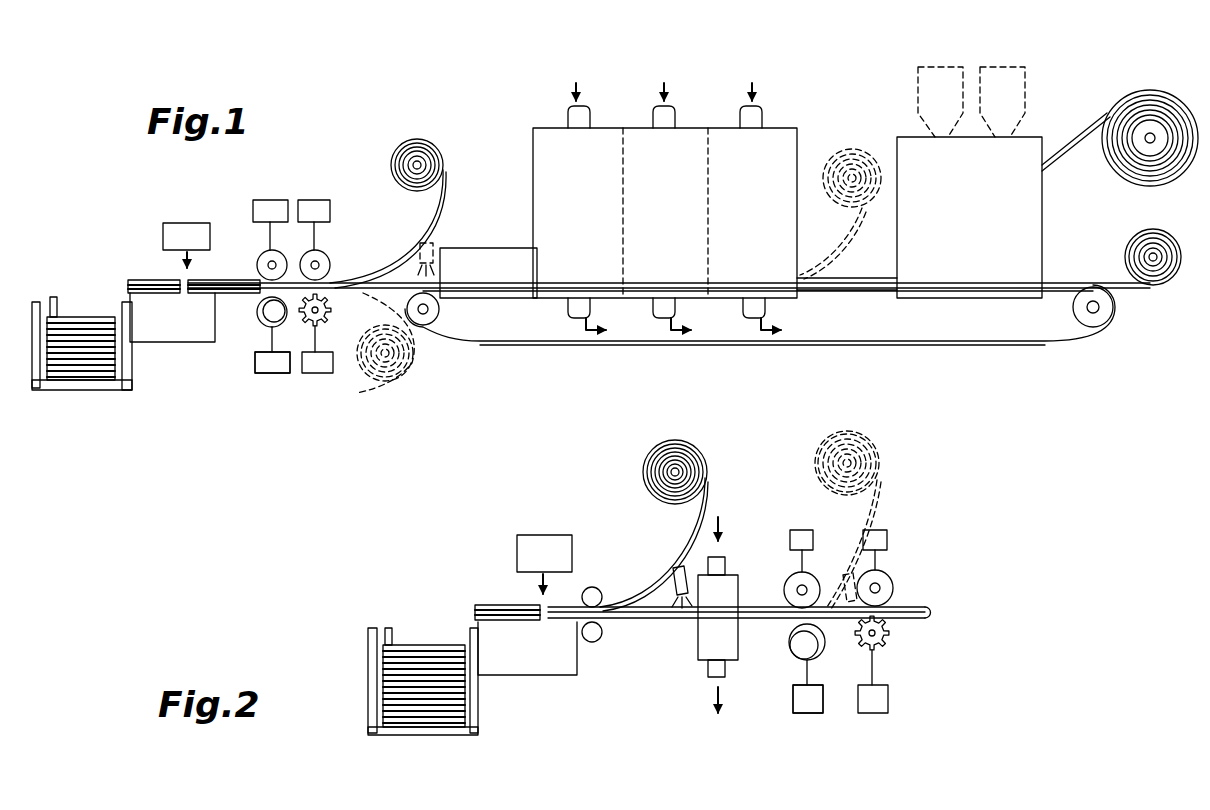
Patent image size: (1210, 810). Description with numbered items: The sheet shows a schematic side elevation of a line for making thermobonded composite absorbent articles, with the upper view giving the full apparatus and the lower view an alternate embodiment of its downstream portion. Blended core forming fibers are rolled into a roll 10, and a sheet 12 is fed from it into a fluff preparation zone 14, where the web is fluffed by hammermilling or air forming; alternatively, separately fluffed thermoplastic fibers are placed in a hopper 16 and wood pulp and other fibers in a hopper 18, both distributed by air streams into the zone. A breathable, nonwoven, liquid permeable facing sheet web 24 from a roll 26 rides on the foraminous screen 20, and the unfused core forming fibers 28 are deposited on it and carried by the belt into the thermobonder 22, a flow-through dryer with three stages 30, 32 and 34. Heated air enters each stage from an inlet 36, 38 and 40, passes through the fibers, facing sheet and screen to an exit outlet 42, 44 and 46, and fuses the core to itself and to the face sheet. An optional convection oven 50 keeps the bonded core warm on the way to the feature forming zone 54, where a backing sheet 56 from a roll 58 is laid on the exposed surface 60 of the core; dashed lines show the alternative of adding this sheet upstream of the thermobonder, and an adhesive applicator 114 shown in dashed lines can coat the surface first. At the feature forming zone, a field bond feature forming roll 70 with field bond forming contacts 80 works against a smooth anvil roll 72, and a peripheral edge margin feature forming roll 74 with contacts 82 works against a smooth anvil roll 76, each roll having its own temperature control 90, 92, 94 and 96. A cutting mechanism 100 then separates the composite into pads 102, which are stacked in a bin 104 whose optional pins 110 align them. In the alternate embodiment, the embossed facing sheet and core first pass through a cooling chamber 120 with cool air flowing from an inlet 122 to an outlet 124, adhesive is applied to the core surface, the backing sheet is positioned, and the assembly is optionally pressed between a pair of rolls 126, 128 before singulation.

In FIG. 1, the roll of core forming fibers 10 is at (1150, 90).
In FIG. 1, the sheet 12 is at (1085, 128).
In FIG. 1, the fluff preparation zone 14 is at (905, 150).
In FIG. 1, the hopper 16 is at (928, 85).
In FIG. 1, the hopper 18 is at (1020, 90).
In FIG. 1, the foraminous screen 20 is at (825, 294).
In FIG. 1, the thermobonder 22 is at (547, 142).
In FIG. 1, the facing sheet web 24 is at (237, 288).
In FIG. 2, the facing sheet web 24 is at (928, 618).
In FIG. 1, the roll 26 is at (410, 367).
In FIG. 1, the unfused core forming fibers 28 is at (242, 295).
In FIG. 2, the unfused core forming fibers 28 is at (930, 608).
In FIG. 1, the first stage 30 is at (746, 209).
In FIG. 1, the second stage 32 is at (678, 213).
In FIG. 1, the third stage 34 is at (595, 213).
In FIG. 1, the inlet 36 is at (760, 110).
In FIG. 1, the inlet 38 is at (670, 110).
In FIG. 1, the inlet 40 is at (585, 110).
In FIG. 1, the exit outlet 42 is at (767, 310).
In FIG. 1, the exit outlet 44 is at (677, 310).
In FIG. 1, the exit outlet 46 is at (592, 310).
In FIG. 1, the convection oven 50 is at (483, 256).
In FIG. 1, the feature forming zone 54 is at (333, 242).
In FIG. 1, the backing sheet 56 is at (215, 282).
In FIG. 2, the backing sheet 56 is at (660, 590).
In FIG. 1, the roll 58 is at (432, 147).
In FIG. 2, the roll 58 is at (695, 450).
In FIG. 1, the exposed surface 60 is at (387, 279).
In FIG. 2, the exposed surface 60 is at (925, 605).
In FIG. 1, the field bond feature forming roll 70 is at (325, 320).
In FIG. 2, the field bond feature forming roll 70 is at (890, 637).
In FIG. 1, the anvil roll 72 is at (302, 258).
In FIG. 2, the anvil roll 72 is at (893, 580).
In FIG. 1, the peripheral edge margin feature forming roll 74 is at (260, 325).
In FIG. 2, the peripheral edge margin feature forming roll 74 is at (790, 640).
In FIG. 1, the anvil roll 76 is at (258, 258).
In FIG. 2, the anvil roll 76 is at (786, 595).
In FIG. 1, the field bond forming contacts 80 is at (330, 305).
In FIG. 2, the field bond forming contacts 80 is at (885, 648).
In FIG. 1, the contacts 82 is at (262, 322).
In FIG. 2, the contacts 82 is at (795, 658).
In FIG. 1, the temperature control 90 is at (318, 373).
In FIG. 2, the temperature control 90 is at (877, 713).
In FIG. 1, the temperature control 92 is at (314, 199).
In FIG. 2, the temperature control 92 is at (887, 538).
In FIG. 1, the temperature control 94 is at (280, 373).
In FIG. 2, the temperature control 94 is at (812, 713).
In FIG. 1, the temperature control 96 is at (270, 200).
In FIG. 2, the temperature control 96 is at (790, 540).
In FIG. 1, the cutting mechanism 100 is at (163, 236).
In FIG. 2, the cutting mechanism 100 is at (517, 548).
In FIG. 1, the pads 102 is at (47, 353).
In FIG. 2, the pads 102 is at (383, 660).
In FIG. 1, the bin 104 is at (126, 392).
In FIG. 2, the bin 104 is at (478, 730).
In FIG. 1, the pins 110 is at (55, 297).
In FIG. 2, the pins 110 is at (389, 628).
In FIG. 1, the adhesive applicator 114 is at (430, 243).
In FIG. 2, the adhesive applicator 114 is at (688, 566).
In FIG. 2, the cooling chamber 120 is at (700, 655).
In FIG. 2, the inlet 122 is at (725, 560).
In FIG. 2, the outlet 124 is at (725, 672).
In FIG. 2, the roll 126 is at (596, 587).
In FIG. 2, the roll 128 is at (596, 642).